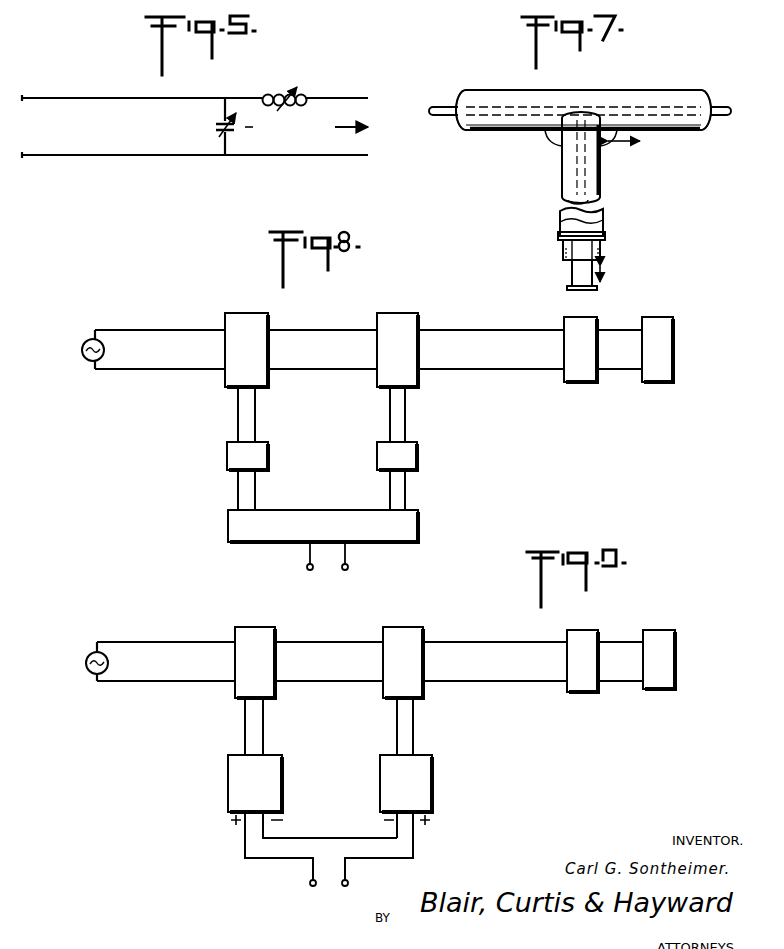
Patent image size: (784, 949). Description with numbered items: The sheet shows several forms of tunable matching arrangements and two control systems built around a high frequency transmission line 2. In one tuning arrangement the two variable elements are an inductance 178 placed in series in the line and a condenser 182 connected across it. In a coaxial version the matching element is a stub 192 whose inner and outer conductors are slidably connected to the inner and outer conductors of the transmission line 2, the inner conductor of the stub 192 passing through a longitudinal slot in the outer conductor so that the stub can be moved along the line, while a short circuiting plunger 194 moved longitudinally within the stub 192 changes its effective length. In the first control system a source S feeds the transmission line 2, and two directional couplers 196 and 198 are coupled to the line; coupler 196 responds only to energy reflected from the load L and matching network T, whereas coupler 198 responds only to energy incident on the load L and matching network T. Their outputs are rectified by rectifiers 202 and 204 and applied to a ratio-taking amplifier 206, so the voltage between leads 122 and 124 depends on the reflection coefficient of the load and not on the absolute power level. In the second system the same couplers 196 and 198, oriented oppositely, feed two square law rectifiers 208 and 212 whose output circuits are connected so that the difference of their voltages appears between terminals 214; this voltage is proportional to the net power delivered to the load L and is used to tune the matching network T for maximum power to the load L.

In FIG. 5, the transmission line 2 is at (29, 102).
In FIG. 7, the transmission line 2 is at (494, 88).
In FIG. 8, the transmission line 2 is at (127, 333).
In FIG. 9, the transmission line 2 is at (131, 645).
In FIG. 5, the inductance 178 is at (280, 94).
In FIG. 5, the condenser 182 is at (216, 126).
In FIG. 7, the stub 192 is at (565, 199).
In FIG. 7, the short circuiting plunger 194 is at (570, 273).
In FIG. 8, the directional coupler 196 is at (247, 313).
In FIG. 9, the directional coupler 196 is at (260, 627).
In FIG. 8, the directional coupler 198 is at (395, 313).
In FIG. 9, the directional coupler 198 is at (413, 626).
In FIG. 8, the rectifier 202 is at (227, 459).
In FIG. 8, the rectifier 204 is at (418, 460).
In FIG. 8, the ratio-taking amplifier 206 is at (228, 522).
In FIG. 8, the lead 122 is at (350, 558).
In FIG. 8, the lead 124 is at (306, 557).
In FIG. 9, the square law rectifier 208 is at (228, 786).
In FIG. 9, the square law rectifier 212 is at (437, 786).
In FIG. 9, the terminals 214 is at (356, 889).
In FIG. 8, the source S is at (81, 350).
In FIG. 8, the matching network T is at (568, 317).
In FIG. 9, the matching network T is at (572, 630).
In FIG. 8, the load L is at (676, 320).
In FIG. 9, the load L is at (678, 632).